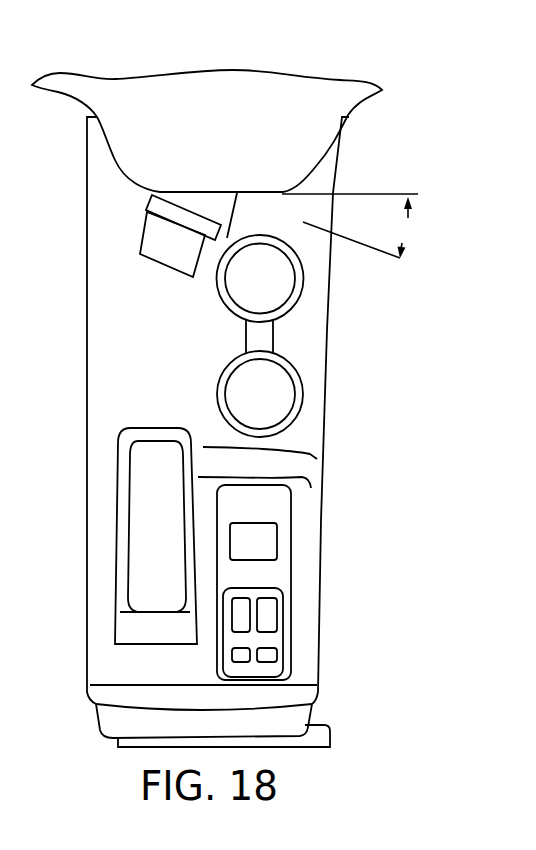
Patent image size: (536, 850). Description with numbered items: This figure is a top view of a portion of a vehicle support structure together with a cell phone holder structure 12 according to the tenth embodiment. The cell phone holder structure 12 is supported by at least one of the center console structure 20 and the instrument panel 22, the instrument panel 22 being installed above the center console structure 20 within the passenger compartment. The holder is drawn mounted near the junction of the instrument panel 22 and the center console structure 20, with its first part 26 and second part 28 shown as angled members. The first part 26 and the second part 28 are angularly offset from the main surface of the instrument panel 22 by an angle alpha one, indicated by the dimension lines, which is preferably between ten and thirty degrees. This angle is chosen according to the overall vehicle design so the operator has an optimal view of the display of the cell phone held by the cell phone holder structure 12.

The cell phone holder structure 12 is at (140, 198).
The center console structure 20 is at (300, 335).
The instrument panel 22 is at (322, 155).
The first part 26 is at (232, 209).
The second part 28 is at (142, 238).